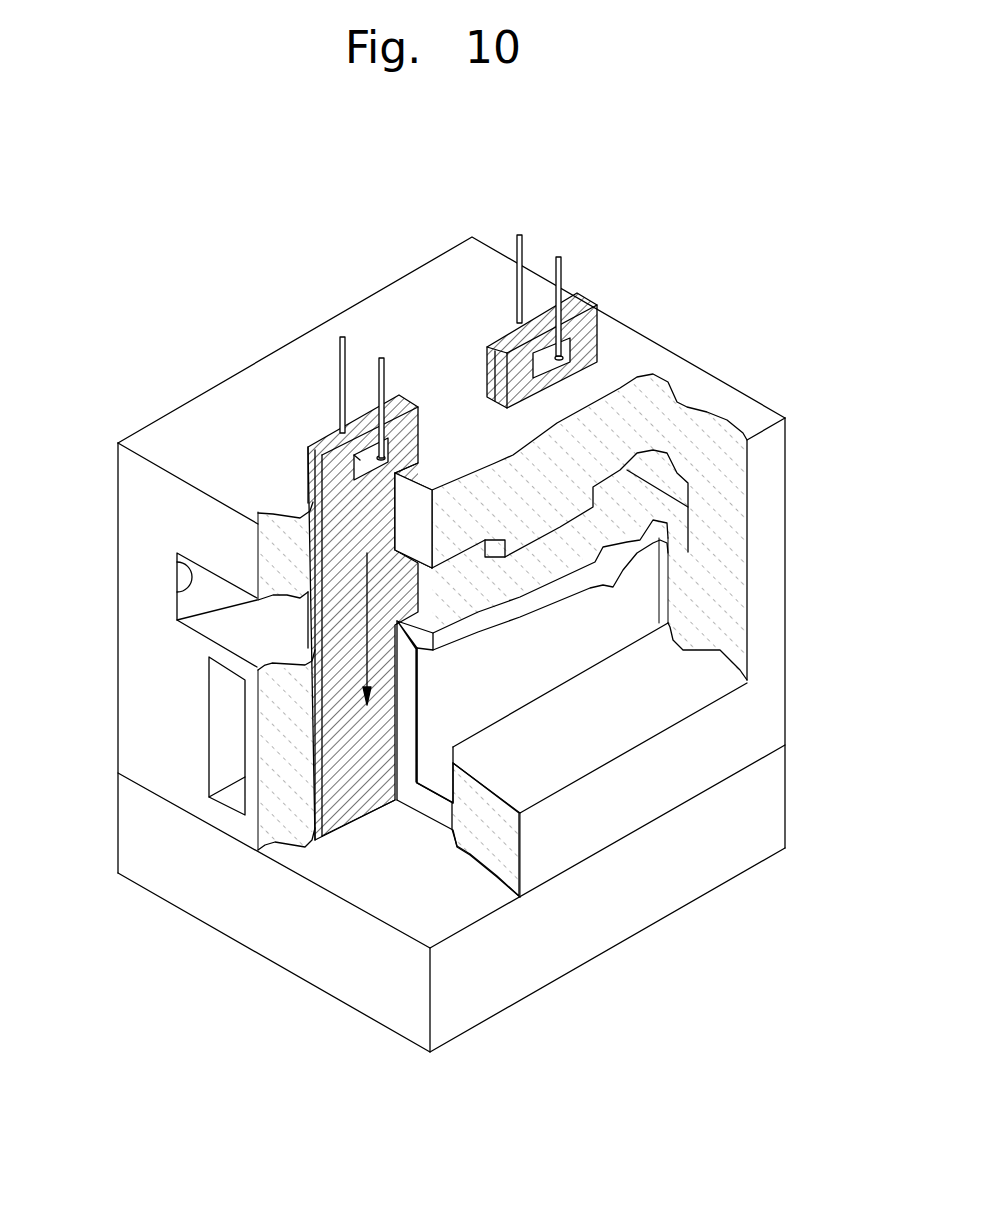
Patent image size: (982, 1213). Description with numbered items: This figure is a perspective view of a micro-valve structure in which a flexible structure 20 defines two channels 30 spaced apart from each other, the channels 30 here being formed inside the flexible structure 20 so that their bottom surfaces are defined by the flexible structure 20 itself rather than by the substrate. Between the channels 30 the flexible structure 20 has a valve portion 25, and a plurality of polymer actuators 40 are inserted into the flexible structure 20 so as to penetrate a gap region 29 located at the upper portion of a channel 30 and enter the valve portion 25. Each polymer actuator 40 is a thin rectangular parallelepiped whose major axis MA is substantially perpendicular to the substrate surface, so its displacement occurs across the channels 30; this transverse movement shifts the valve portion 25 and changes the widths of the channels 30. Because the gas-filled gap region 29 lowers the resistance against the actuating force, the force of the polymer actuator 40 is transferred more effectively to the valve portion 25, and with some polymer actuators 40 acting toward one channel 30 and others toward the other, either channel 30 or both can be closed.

The flexible structure 20 is at (763, 718).
The valve portion 25 is at (252, 757).
The gap region 29 is at (178, 590).
The channels 30 is at (640, 604).
The polymer actuator 40 is at (590, 330).
The major axis MA is at (366, 628).